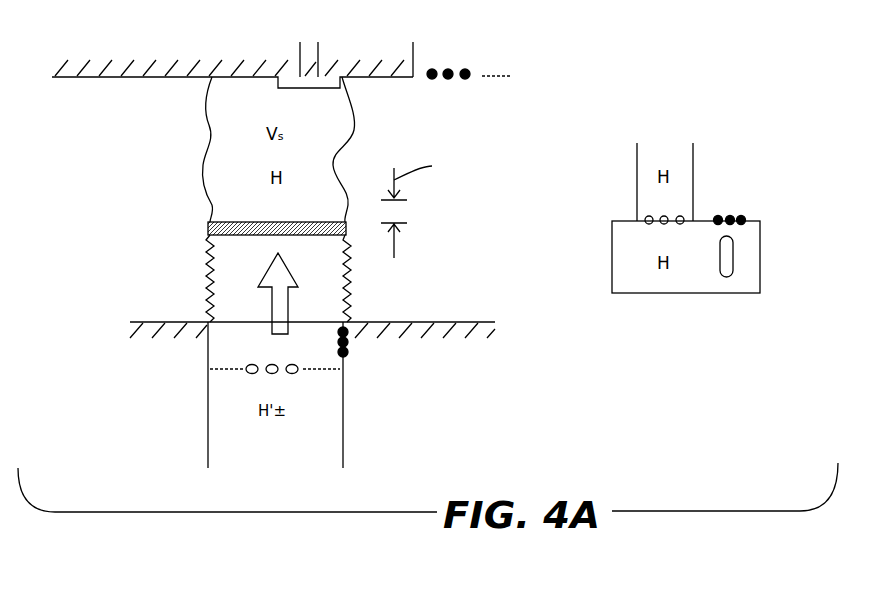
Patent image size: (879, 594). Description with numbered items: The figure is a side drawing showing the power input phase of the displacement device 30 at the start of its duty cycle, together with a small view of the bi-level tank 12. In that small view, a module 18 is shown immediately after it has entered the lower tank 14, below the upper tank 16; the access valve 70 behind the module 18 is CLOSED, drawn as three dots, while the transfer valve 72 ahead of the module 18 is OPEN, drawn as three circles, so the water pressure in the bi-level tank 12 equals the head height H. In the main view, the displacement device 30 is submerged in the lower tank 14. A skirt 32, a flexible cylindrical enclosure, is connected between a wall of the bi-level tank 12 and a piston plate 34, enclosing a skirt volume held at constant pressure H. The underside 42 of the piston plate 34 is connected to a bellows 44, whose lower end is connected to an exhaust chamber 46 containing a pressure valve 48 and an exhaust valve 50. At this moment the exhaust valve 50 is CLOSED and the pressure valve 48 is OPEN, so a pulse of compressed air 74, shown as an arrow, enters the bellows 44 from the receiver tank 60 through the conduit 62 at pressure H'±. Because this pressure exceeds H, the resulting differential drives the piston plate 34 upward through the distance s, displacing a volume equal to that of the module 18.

The bi-level tank 12 is at (612, 236).
The lower tank 14 is at (66, 255).
The upper tank 16 is at (693, 172).
The power module 18 is at (733, 262).
The displacement device 30 is at (440, 256).
The skirt 32 is at (212, 138).
The piston plate 34 is at (205, 252).
The underside 42 is at (205, 252).
The bellows 44 is at (208, 283).
The exhaust chamber 46 is at (222, 344).
The pressure valve 48 is at (292, 374).
The exhaust valve 50 is at (350, 352).
The receiver tank 60 is at (294, 484).
The conduit 62 is at (225, 432).
The access valve 70 is at (732, 218).
The transfer valve 72 is at (450, 70).
The pulse of compressed air 74 is at (288, 307).